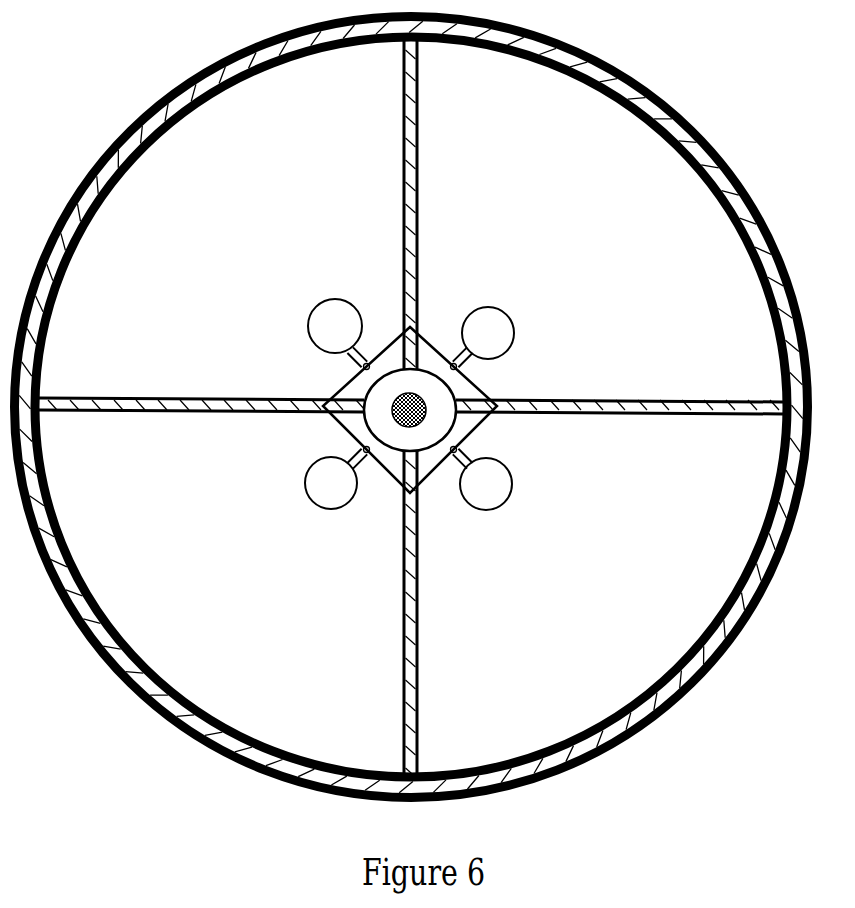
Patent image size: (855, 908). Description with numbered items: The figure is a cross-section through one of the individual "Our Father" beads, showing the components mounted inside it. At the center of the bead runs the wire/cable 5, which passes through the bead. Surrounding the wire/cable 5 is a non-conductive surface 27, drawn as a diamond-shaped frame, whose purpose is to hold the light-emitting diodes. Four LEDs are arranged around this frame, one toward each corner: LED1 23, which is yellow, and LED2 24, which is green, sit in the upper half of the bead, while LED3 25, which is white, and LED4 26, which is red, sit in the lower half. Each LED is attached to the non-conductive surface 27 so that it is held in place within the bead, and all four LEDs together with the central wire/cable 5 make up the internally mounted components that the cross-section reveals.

The wire/cable 5 is at (416, 422).
The LED1—yellow 23 is at (332, 324).
The LED2—green 24 is at (495, 332).
The LED3—white 25 is at (331, 495).
The LED4—red 26 is at (489, 492).
The non-conductive surface to hold LEDs 27 is at (423, 337).